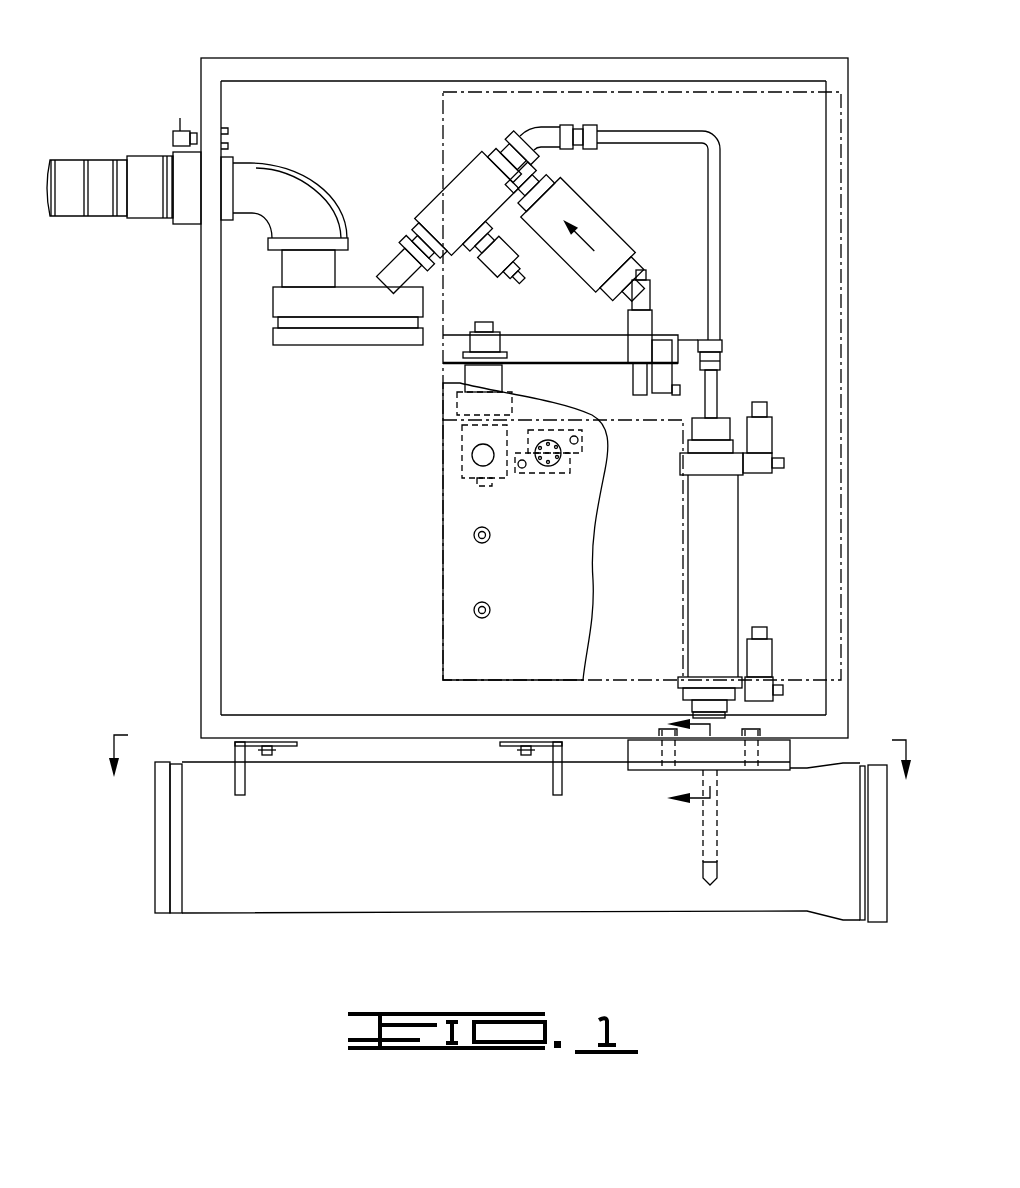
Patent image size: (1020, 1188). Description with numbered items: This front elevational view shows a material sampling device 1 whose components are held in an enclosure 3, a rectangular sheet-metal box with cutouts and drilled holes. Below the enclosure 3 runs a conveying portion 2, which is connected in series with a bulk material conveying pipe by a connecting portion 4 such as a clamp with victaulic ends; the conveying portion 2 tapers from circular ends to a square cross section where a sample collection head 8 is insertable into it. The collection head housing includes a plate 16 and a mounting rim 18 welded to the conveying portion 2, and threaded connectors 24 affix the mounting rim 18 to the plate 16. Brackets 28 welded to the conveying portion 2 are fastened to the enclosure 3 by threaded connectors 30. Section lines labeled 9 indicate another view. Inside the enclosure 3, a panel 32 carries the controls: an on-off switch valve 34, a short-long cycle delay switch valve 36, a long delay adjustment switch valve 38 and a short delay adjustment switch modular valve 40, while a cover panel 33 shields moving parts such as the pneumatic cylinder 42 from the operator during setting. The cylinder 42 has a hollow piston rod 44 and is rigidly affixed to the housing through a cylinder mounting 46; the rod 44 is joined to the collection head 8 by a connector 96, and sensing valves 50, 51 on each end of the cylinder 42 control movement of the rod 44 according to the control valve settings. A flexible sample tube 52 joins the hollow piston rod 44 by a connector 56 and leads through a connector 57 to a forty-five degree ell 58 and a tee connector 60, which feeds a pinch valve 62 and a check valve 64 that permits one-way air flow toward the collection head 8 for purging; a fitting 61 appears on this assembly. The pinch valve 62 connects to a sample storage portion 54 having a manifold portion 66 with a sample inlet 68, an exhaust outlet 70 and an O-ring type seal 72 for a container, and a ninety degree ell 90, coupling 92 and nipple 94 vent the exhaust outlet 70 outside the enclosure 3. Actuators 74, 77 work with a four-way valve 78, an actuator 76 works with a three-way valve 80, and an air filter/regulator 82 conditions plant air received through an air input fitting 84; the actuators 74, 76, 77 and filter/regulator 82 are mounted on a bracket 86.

The material sampling device 1 is at (120, 60).
The conveying portion 2 is at (222, 914).
The enclosure 3 is at (201, 397).
The connecting portion 4 is at (163, 915).
The sample collection head 8 is at (745, 881).
The section line 9- 9 is at (509, 773).
The plate 16 is at (628, 748).
The mounting rim 18 is at (628, 763).
The threaded connectors 24 is at (768, 731).
The brackets 28 is at (247, 790).
The threaded connectors 30 is at (272, 756).
The panel 32 is at (443, 659).
The cover panel 33 is at (443, 114).
The on-off switch valve 34 is at (474, 607).
The short-long cycle delay switch valve 36 is at (474, 537).
The long delay adjustment switch valve 38 is at (470, 456).
The short delay adjustment switch modular valve 40 is at (546, 468).
The pneumatic cylinder 42 is at (733, 566).
The hollow piston rod 44 is at (703, 835).
The cylinder mounting 46 is at (745, 710).
The sensing valve 50 is at (772, 434).
The sensing valve 51 is at (772, 657).
The flexible sample tube 52 is at (718, 245).
The sample storage portion 54 is at (501, 208).
The connector 56 is at (723, 347).
The connector 57 is at (586, 125).
The 45° ell 58 is at (546, 128).
The tee connector 60 is at (508, 160).
The fitting 61 is at (492, 262).
The pinch valve 62 is at (437, 235).
The check valve 64 is at (598, 214).
The manifold portion 66 is at (273, 300).
The sample inlet 68 is at (400, 268).
The exhaust outlet 70 is at (282, 266).
The O-ring type seal 72 is at (275, 325).
The actuator 74 is at (648, 282).
The actuator 76 is at (720, 362).
The actuator 77 is at (630, 376).
The four-way valve 78 is at (655, 330).
The three-way valve 80 is at (676, 343).
The air filter/regulator 82 is at (462, 343).
The air input fitting 84 is at (180, 120).
The bracket 86 is at (546, 335).
The 90° ell 90 is at (263, 176).
The coupling 92 is at (173, 152).
The nipple 94 is at (74, 216).
The connector 96 is at (703, 878).